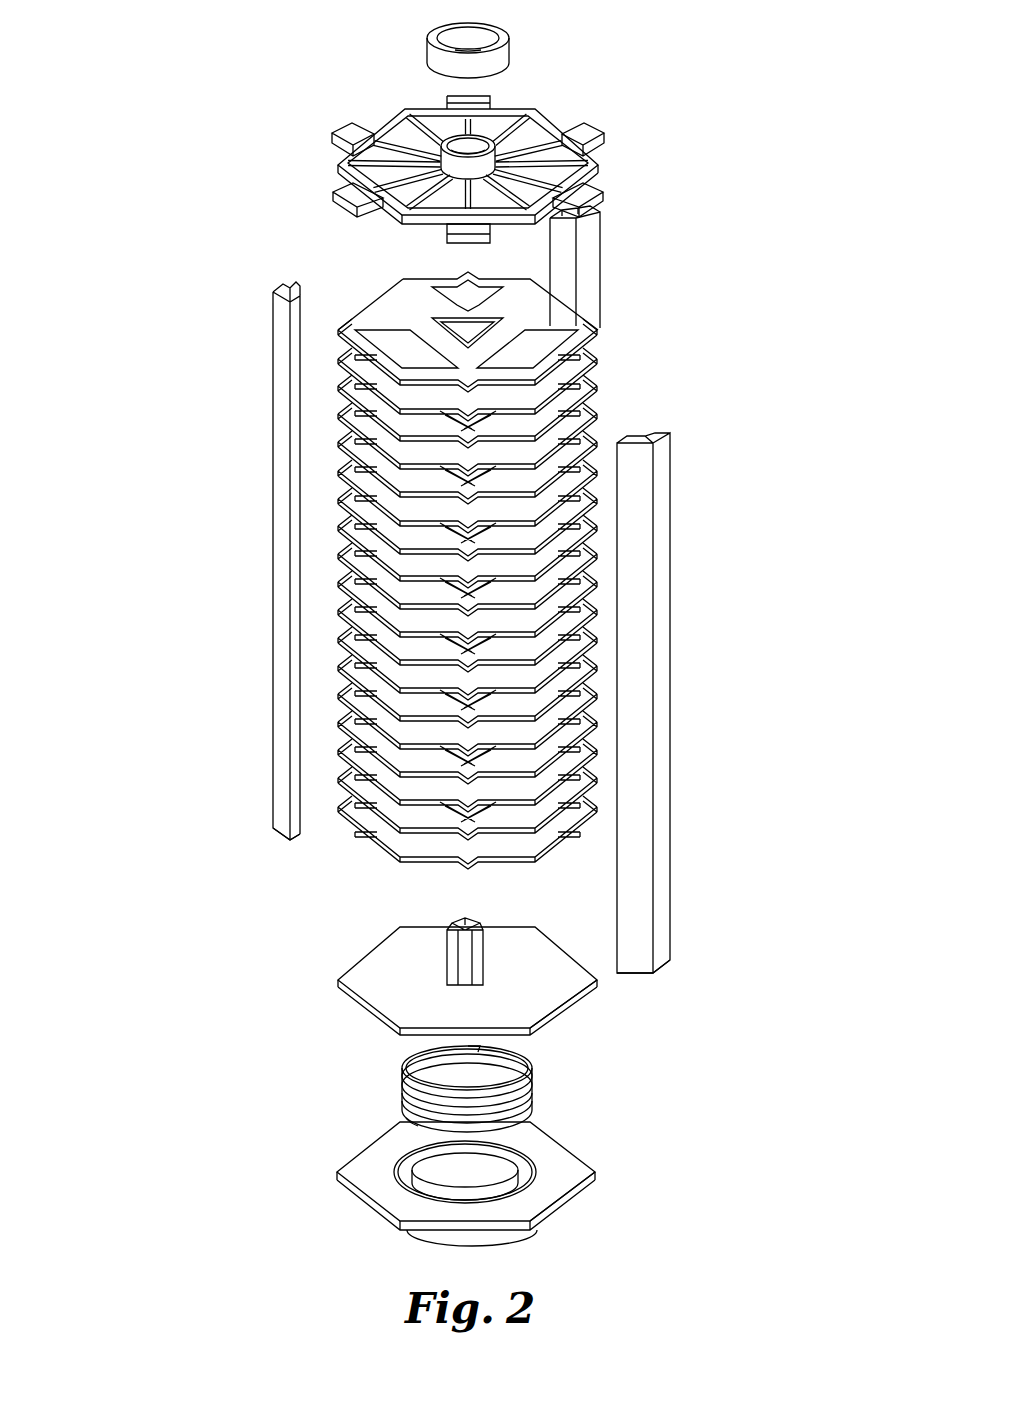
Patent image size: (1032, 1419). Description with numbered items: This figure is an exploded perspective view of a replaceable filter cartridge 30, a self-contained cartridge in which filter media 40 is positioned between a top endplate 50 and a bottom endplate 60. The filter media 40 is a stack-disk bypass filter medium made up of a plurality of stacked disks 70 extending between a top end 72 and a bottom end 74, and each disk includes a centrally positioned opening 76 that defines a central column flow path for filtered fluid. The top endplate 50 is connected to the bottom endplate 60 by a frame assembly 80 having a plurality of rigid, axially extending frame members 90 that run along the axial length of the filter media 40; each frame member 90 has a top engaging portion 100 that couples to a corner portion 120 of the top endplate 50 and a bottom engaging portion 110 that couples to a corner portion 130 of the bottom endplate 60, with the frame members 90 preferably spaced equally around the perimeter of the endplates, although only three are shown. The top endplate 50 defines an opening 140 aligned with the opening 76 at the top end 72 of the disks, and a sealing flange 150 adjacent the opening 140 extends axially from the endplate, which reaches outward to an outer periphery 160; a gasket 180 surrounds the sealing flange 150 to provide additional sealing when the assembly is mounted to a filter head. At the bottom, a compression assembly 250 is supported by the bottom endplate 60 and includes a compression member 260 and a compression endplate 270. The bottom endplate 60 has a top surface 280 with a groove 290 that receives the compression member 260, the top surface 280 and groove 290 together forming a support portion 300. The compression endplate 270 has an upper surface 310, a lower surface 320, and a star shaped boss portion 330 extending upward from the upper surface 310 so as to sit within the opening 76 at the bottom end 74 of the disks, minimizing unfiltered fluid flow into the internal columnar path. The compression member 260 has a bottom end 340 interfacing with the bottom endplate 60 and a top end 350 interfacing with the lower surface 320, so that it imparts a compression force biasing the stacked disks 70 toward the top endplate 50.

The replaceable filter cartridge 30 is at (770, 428).
The filter media 40 is at (474, 151).
The top endplate 50 is at (633, 124).
The bottom endplate 60 is at (485, 1209).
The stacked disks 70 is at (481, 582).
The top end 72 is at (325, 98).
The bottom end 74 is at (630, 1225).
The opening 76 is at (482, 332).
The frame assembly 80 is at (232, 626).
The frame members 90 is at (485, 589).
The top engaging portion 100 is at (485, 623).
The bottom engaging portion 110 is at (268, 845).
The corner portion 120 is at (406, 236).
The corner portion 130 is at (395, 1242).
The opening 140 is at (460, 140).
The sealing flange 150 is at (500, 131).
The outer periphery 160 is at (346, 160).
The gasket 180 is at (507, 40).
The compression assembly 250 is at (437, 1086).
The compression member 260 is at (542, 1092).
The compression endplate 270 is at (430, 981).
The top surface 280 is at (362, 1170).
The groove 290 is at (533, 1165).
The support portion 300 is at (492, 1183).
The upper surface 310 is at (390, 965).
The lower surface 320 is at (576, 1014).
The boss portion 330 is at (485, 948).
The bottom end 340 is at (364, 1109).
The top end 350 is at (404, 1057).